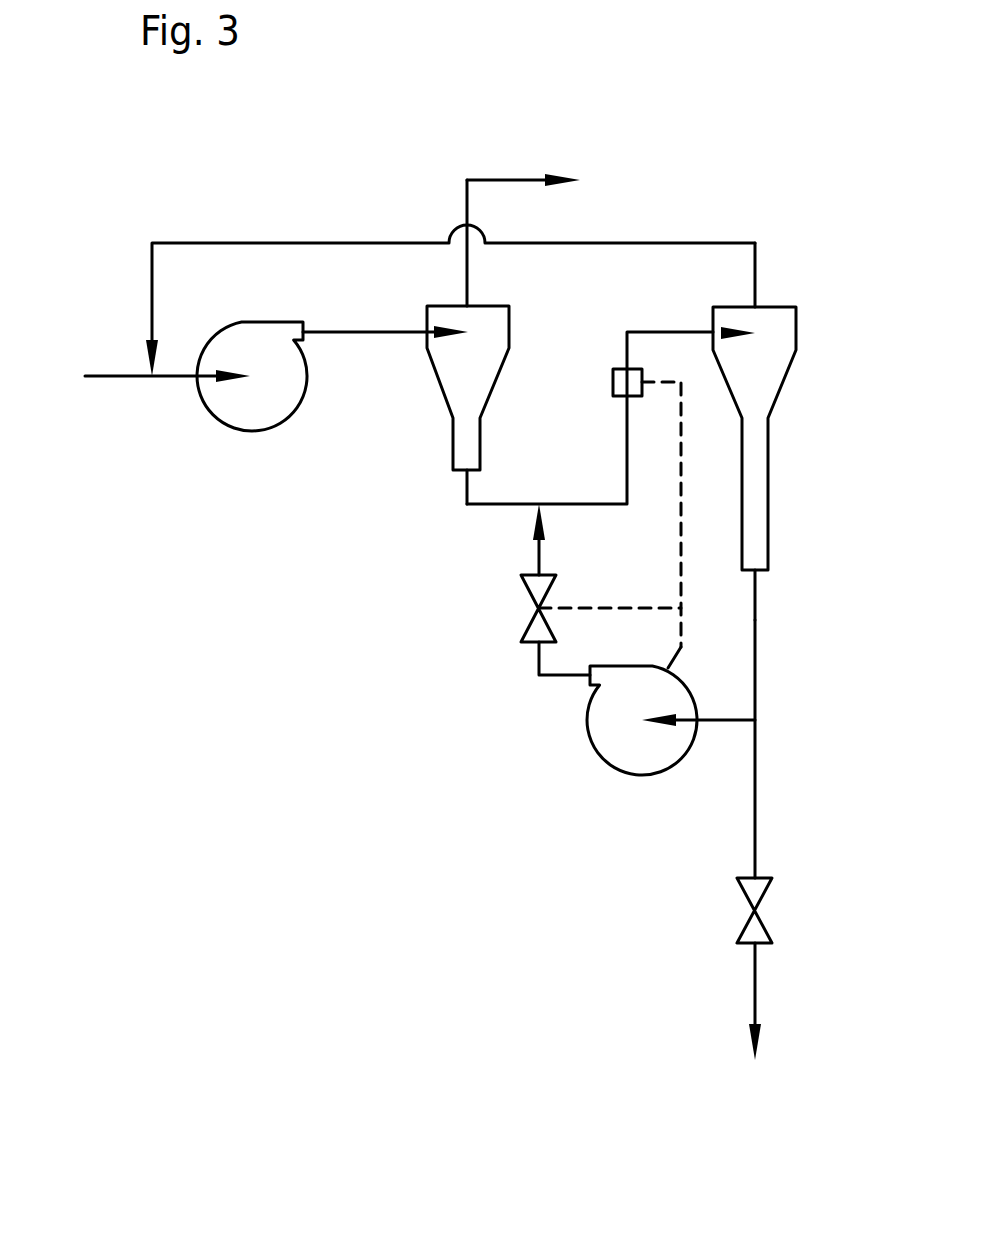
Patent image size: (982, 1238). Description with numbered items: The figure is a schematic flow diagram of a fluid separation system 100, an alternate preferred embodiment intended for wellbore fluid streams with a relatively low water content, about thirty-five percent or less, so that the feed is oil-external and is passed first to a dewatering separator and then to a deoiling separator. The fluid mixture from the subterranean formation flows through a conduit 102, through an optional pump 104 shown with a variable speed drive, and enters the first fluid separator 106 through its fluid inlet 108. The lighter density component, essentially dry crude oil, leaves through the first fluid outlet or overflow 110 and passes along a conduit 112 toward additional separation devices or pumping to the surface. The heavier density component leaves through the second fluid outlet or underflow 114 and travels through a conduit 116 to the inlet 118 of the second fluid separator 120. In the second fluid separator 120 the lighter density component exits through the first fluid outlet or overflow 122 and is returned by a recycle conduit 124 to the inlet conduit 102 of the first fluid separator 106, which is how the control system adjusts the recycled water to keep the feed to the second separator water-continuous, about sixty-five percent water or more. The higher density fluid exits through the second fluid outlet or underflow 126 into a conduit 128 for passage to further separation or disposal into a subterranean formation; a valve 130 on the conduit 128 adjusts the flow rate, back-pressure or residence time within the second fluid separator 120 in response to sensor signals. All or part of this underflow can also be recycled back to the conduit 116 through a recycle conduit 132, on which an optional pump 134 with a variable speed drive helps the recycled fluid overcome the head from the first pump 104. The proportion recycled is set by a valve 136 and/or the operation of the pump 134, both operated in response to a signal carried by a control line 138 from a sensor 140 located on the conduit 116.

The fluid separation system 100 is at (386, 655).
The conduit 102 is at (120, 376).
The pump 104 is at (252, 430).
The first fluid separator 106 is at (468, 388).
The fluid inlet 108 is at (455, 326).
The first fluid outlet or overflow 110 is at (460, 305).
The conduit 112 is at (465, 187).
The second fluid outlet or underflow 114 is at (465, 472).
The conduit 116 is at (582, 503).
The inlet 118 is at (750, 328).
The second fluid separator 120 is at (754, 438).
The first fluid outlet or overflow 122 is at (752, 305).
The recycle conduit 124 is at (647, 243).
The second fluid outlet or underflow 126 is at (757, 572).
The conduit 128 is at (755, 660).
The valve 130 is at (758, 910).
The recycle conduit 132 is at (550, 675).
The pump 134 is at (600, 752).
The valve 136 is at (538, 608).
The control line 138 is at (681, 447).
The sensor 140 is at (613, 382).